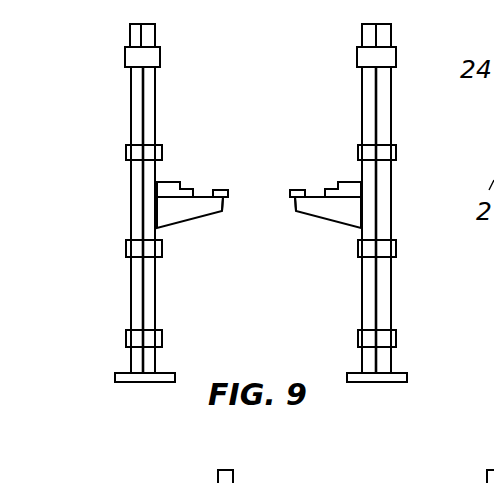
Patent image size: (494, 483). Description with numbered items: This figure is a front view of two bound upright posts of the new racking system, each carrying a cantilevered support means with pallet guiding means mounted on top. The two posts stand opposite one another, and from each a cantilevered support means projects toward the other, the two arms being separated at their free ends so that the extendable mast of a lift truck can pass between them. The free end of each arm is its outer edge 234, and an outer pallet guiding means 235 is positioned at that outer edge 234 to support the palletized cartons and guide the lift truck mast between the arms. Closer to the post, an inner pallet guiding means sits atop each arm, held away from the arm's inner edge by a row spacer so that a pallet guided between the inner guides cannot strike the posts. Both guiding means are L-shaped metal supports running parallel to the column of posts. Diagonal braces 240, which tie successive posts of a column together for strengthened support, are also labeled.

The outer edge 234 is at (277, 195).
The outer pallet guiding means 235 is at (292, 201).
The diagonal braces 240 is at (402, 470).